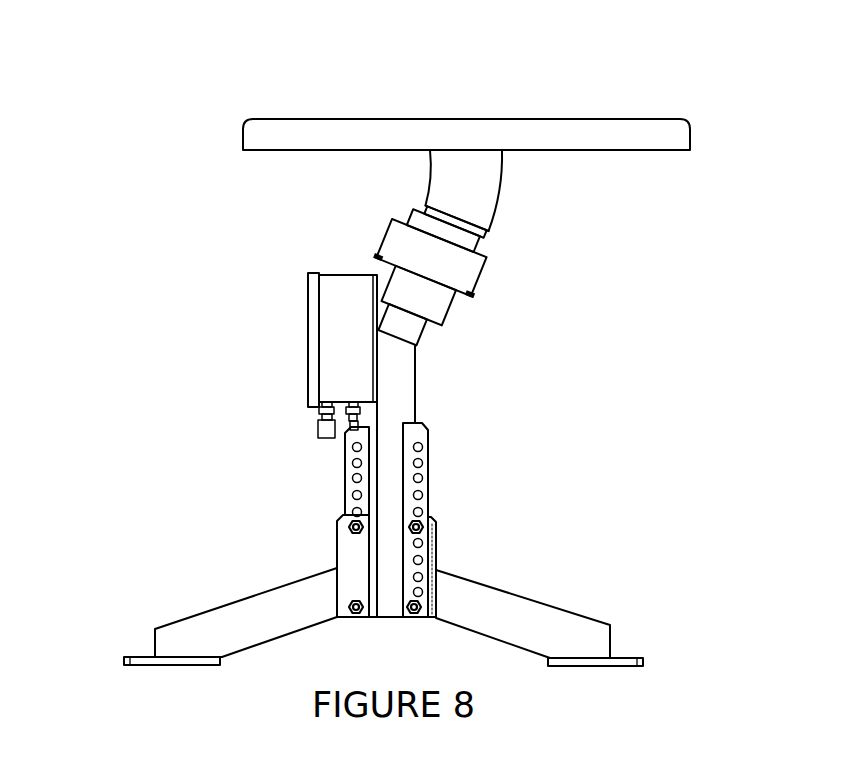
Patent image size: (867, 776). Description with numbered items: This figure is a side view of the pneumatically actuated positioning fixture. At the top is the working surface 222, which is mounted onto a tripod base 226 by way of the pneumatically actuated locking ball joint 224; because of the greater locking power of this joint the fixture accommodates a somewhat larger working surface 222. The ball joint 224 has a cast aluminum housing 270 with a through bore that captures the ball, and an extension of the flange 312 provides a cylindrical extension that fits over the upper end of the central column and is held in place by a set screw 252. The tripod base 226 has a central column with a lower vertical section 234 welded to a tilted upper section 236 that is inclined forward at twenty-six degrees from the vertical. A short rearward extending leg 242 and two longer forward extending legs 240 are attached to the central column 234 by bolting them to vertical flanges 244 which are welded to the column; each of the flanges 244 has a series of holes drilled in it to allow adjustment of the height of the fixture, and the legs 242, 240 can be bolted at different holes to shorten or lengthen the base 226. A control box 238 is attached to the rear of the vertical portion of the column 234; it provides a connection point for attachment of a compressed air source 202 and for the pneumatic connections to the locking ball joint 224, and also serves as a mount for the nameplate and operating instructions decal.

The working surface 222 is at (607, 119).
The cast aluminum housing 270 is at (490, 233).
The pneumatically actuated locking ball joint 224 is at (470, 298).
The flange 312 is at (377, 260).
The set screw 252 is at (442, 318).
The tilted upper section 236 is at (418, 344).
The control box 238 is at (308, 313).
The compressed air source 202 is at (322, 437).
The tripod base 226 is at (570, 447).
The lower vertical section of central column 234 is at (395, 492).
The vertical flanges 244 is at (345, 510).
The rearward extending leg 242 is at (232, 602).
The forward extending legs 240 is at (572, 612).